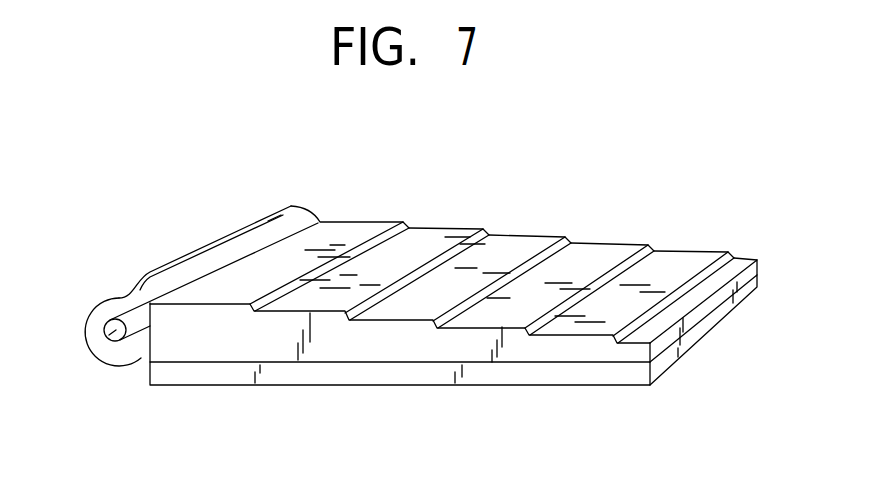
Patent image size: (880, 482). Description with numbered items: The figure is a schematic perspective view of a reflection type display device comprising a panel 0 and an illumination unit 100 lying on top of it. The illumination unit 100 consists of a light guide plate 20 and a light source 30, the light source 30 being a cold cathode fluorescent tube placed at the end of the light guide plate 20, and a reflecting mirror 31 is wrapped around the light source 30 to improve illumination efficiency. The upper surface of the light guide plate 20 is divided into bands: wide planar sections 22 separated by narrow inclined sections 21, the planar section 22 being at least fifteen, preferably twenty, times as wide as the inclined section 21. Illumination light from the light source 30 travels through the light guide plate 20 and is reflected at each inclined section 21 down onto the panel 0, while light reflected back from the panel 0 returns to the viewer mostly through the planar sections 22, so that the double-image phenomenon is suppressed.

The illumination unit 100 is at (764, 207).
The panel 0 is at (149, 380).
The light guide plate 20 is at (453, 306).
The inclined section 21 is at (493, 229).
The planar section 22 is at (607, 243).
The light source 30 is at (93, 350).
The reflecting mirror 31 is at (100, 302).